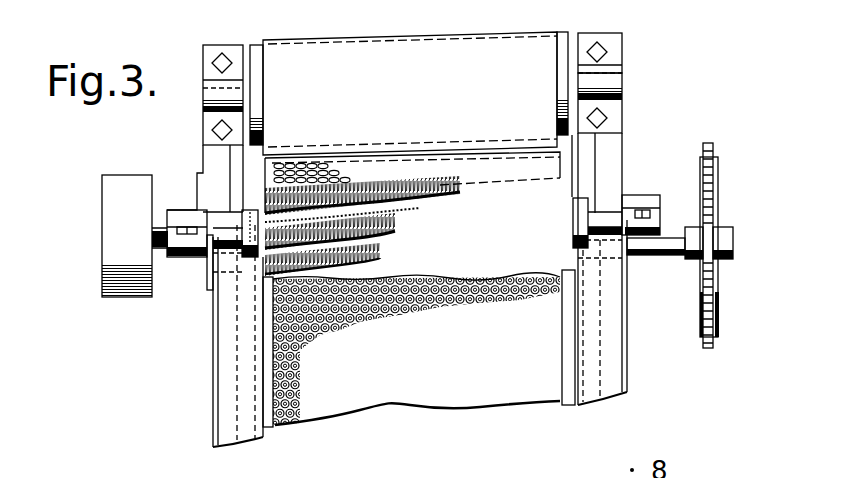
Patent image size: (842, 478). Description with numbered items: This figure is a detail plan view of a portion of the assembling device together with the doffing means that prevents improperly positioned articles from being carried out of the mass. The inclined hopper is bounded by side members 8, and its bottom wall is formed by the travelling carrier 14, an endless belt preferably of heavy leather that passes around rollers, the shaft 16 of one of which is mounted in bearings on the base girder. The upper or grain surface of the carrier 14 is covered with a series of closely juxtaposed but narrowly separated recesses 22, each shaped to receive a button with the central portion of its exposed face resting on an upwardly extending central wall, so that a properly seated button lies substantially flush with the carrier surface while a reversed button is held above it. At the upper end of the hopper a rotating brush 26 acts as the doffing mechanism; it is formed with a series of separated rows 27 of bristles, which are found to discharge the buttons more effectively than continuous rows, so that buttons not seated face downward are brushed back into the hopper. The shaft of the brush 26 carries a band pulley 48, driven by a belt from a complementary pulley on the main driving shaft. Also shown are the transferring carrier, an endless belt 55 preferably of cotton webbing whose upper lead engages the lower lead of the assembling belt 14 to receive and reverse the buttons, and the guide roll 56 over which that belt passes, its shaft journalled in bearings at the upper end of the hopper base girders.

The side members 8 is at (223, 381).
The travelling carrier 14 is at (300, 421).
The shaft 16 is at (658, 257).
The recesses 22 is at (362, 326).
The rotating brush 26 is at (262, 262).
The rows of bristles 27 is at (360, 240).
The band pulley 48 is at (115, 220).
The endless belt 55 is at (532, 117).
The guide roll 56 is at (562, 58).